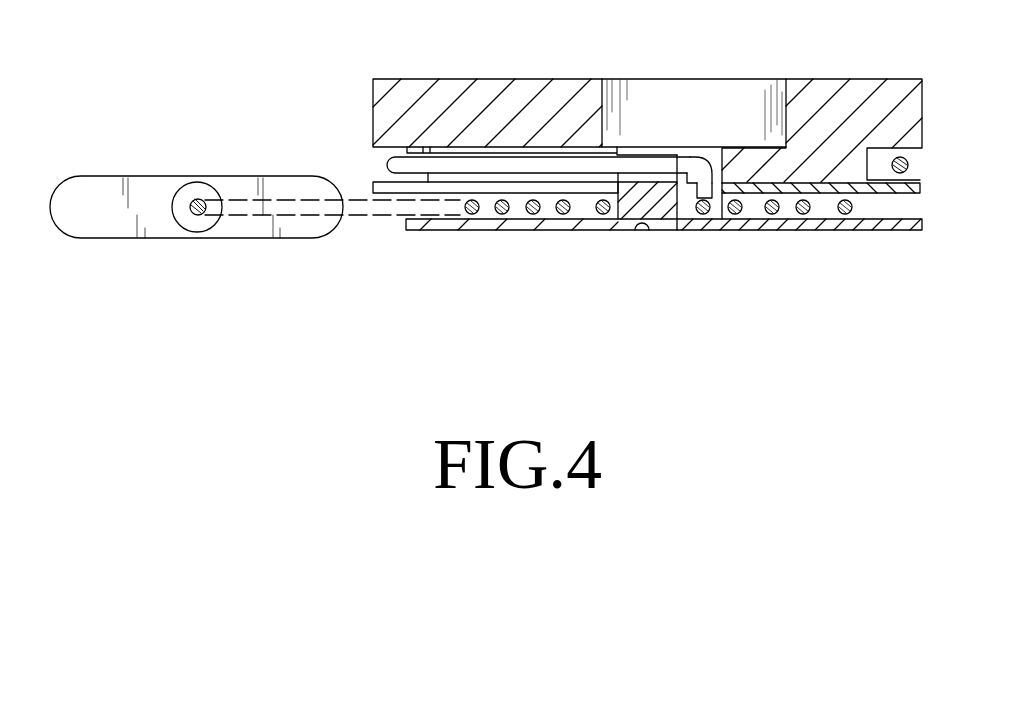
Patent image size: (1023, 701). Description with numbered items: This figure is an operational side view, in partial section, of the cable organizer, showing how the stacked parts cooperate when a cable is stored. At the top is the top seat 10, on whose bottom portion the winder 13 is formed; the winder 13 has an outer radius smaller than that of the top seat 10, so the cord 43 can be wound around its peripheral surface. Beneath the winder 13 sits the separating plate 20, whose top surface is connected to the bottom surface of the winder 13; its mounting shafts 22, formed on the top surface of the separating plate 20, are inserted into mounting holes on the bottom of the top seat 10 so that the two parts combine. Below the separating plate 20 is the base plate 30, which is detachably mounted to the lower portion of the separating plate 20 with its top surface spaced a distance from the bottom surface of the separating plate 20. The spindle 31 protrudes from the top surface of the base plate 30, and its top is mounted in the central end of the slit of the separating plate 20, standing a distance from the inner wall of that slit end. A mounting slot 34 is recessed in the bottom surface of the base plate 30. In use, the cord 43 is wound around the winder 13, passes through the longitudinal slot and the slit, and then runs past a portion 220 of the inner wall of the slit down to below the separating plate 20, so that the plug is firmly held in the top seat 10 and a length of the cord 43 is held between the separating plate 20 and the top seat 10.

The top seat 10 is at (902, 86).
The winder 13 is at (868, 164).
The separating plate 20 is at (918, 184).
The mounting shaft 22 is at (690, 183).
The portion of the inner wall of the slit 220 is at (717, 195).
The base plate 30 is at (883, 226).
The spindle 31 is at (621, 188).
The mounting slot 34 is at (648, 229).
The cord 43 is at (393, 162).